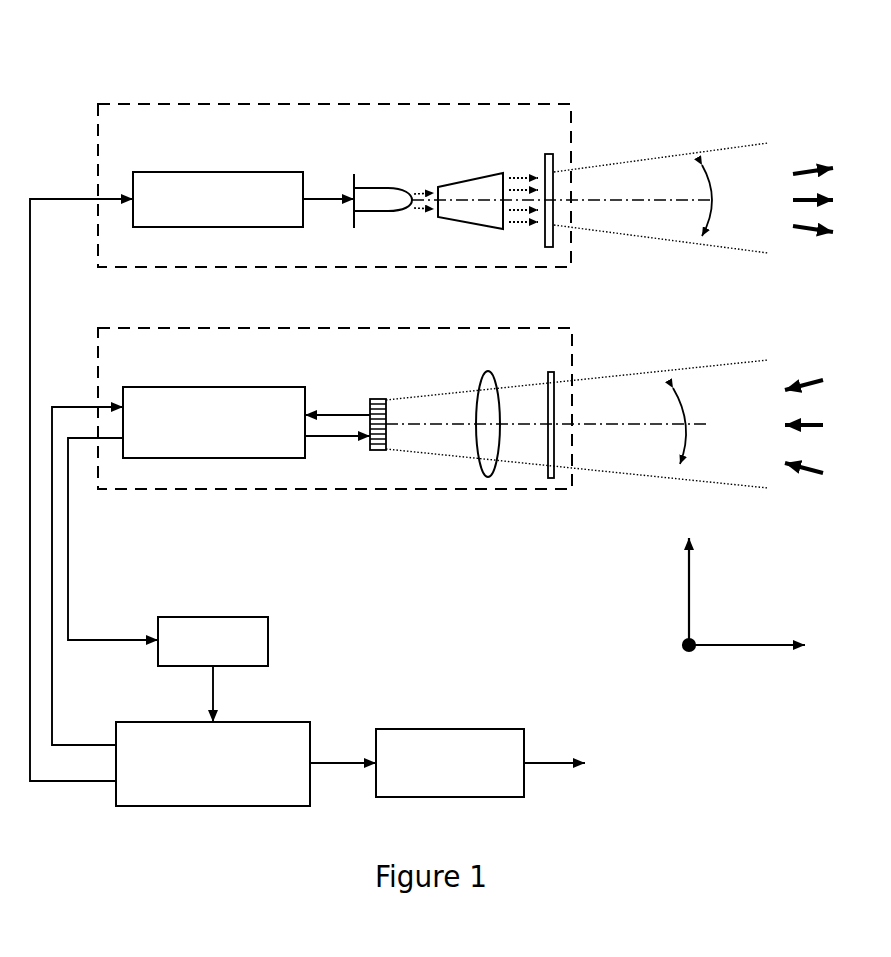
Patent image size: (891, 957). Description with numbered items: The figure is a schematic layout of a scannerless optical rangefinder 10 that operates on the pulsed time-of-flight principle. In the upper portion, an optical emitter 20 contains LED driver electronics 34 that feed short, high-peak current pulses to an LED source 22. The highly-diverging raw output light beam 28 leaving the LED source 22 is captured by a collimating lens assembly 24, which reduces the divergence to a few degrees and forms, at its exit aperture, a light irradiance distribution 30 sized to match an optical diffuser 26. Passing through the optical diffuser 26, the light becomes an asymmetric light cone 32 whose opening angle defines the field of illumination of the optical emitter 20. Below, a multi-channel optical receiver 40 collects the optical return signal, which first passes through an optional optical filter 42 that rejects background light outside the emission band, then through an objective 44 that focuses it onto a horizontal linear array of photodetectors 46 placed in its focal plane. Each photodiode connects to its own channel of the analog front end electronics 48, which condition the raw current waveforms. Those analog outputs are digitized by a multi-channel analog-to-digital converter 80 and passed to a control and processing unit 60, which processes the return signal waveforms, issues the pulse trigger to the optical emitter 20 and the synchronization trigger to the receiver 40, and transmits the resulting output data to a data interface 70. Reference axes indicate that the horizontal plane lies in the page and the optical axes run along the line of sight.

The optical rangefinder 10 is at (162, 43).
The optical emitter 20 is at (467, 103).
The LED source 22 is at (367, 188).
The collimating lens assembly 24 is at (485, 175).
The optical diffuser 26 is at (546, 154).
The raw output light beam 28 is at (420, 211).
The light irradiance distribution 30 is at (524, 228).
The asymmetric light cone 32 is at (597, 167).
The LED driver electronics 34 is at (235, 172).
The multi-channel optical receiver 40 is at (522, 327).
The optical filter 42 is at (548, 377).
The objective 44 is at (480, 380).
The photodetectors 46 is at (372, 399).
The analog front end electronics 48 is at (242, 387).
The control and processing unit 60 is at (292, 721).
The data interface 70 is at (498, 729).
The analog-to-digital converter 80 is at (270, 625).